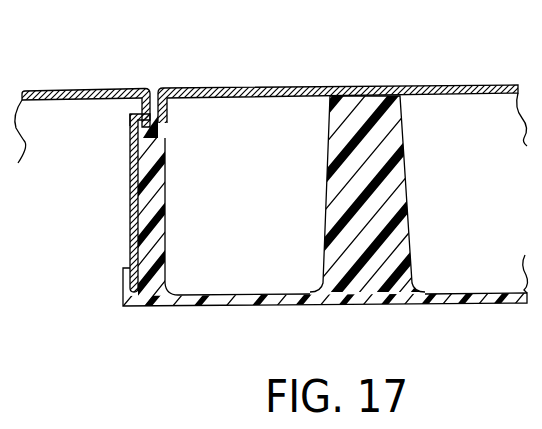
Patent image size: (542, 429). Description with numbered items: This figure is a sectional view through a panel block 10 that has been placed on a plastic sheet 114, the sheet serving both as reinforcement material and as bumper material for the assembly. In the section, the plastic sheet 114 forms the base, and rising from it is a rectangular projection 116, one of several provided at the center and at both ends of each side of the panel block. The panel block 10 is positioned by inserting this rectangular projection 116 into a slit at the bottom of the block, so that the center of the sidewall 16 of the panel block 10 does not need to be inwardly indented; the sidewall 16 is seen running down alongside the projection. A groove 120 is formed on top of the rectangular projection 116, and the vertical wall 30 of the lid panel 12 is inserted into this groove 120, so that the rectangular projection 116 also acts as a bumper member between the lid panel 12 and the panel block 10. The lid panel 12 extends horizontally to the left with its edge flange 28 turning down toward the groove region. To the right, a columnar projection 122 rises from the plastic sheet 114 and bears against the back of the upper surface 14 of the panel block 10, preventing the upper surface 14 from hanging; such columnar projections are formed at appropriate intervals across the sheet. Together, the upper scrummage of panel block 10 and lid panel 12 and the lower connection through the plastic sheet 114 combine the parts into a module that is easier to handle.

The panel block 10 is at (303, 86).
The lid panel 12 is at (63, 90).
The upper surface 14 is at (446, 85).
The sidewall 16 is at (129, 201).
The panel flange 28 is at (108, 88).
The vertical wall 30 is at (137, 120).
The plastic sheet 114 is at (222, 306).
The rectangular projection 116 is at (165, 209).
The groove 120 is at (167, 125).
The columnar projection 122 is at (405, 180).